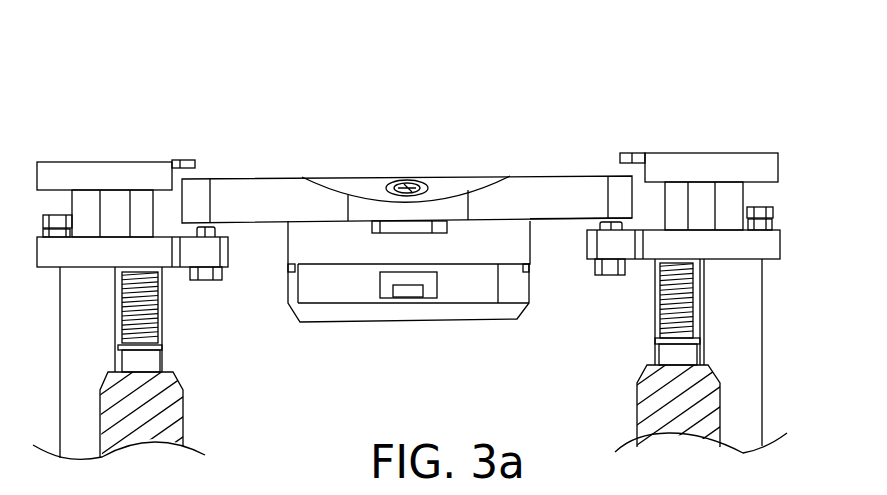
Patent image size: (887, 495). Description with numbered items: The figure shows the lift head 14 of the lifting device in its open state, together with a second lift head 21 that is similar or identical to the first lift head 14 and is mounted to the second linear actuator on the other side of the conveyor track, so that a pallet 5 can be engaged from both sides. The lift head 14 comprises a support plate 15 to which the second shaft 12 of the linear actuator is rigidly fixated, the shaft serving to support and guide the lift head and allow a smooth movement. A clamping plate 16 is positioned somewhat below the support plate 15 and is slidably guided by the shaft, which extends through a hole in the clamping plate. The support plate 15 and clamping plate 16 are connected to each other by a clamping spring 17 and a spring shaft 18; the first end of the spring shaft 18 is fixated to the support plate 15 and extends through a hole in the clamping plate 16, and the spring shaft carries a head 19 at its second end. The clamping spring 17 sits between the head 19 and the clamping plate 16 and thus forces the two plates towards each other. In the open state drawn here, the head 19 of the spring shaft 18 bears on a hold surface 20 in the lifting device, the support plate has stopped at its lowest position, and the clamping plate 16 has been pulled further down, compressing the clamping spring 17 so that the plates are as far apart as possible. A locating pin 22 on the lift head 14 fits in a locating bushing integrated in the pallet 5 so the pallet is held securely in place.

The pallet 5 is at (563, 195).
The second shaft 12 is at (747, 320).
The lift head 14 is at (694, 257).
The support plate 15 is at (713, 163).
The clamping plate 16 is at (765, 242).
The clamping spring 17 is at (660, 308).
The spring shaft 18 is at (675, 205).
The head 19 is at (670, 357).
The hold surface 20 is at (657, 367).
The second lift head 21 is at (98, 133).
The locating pin 22 is at (573, 222).